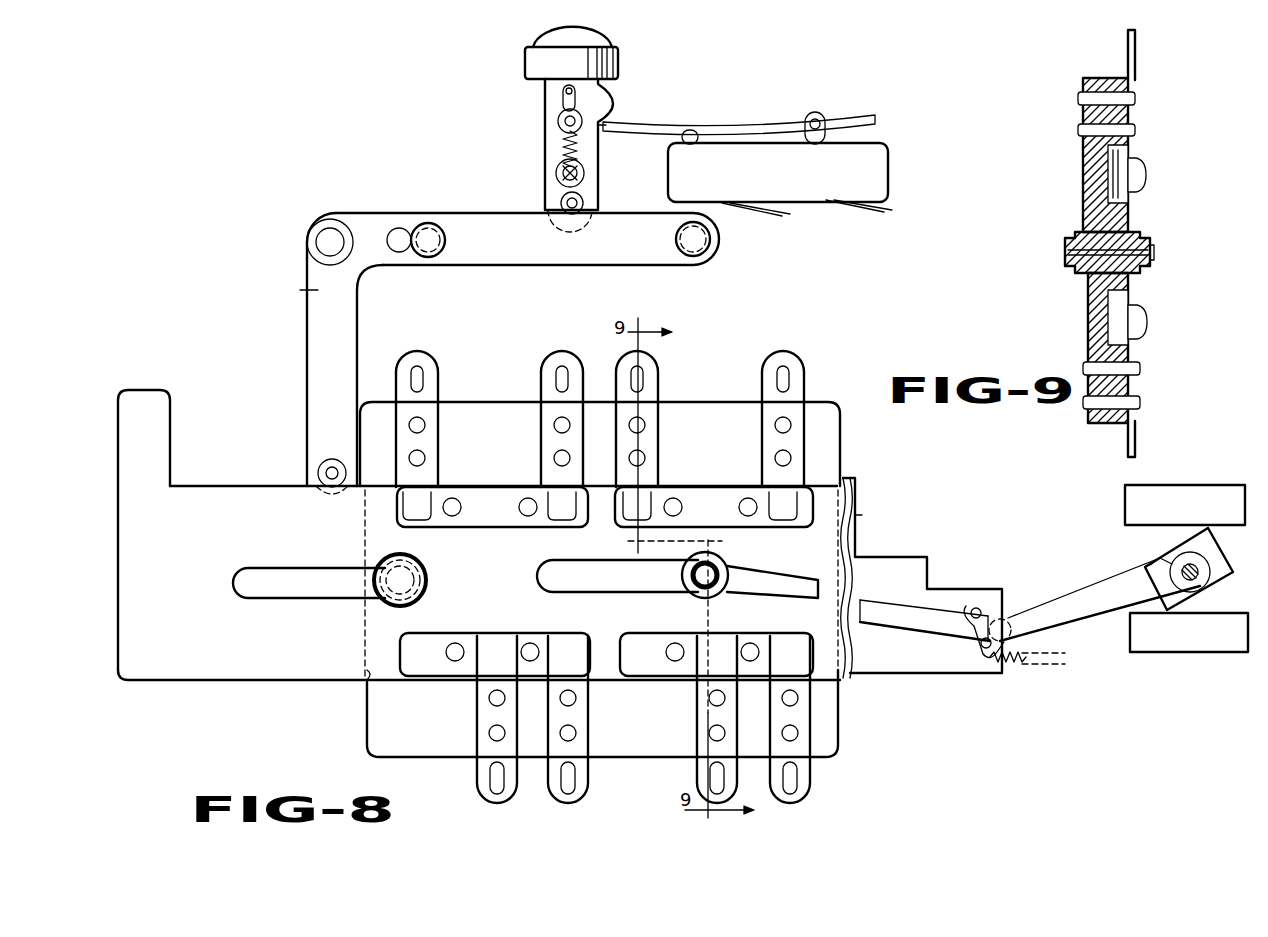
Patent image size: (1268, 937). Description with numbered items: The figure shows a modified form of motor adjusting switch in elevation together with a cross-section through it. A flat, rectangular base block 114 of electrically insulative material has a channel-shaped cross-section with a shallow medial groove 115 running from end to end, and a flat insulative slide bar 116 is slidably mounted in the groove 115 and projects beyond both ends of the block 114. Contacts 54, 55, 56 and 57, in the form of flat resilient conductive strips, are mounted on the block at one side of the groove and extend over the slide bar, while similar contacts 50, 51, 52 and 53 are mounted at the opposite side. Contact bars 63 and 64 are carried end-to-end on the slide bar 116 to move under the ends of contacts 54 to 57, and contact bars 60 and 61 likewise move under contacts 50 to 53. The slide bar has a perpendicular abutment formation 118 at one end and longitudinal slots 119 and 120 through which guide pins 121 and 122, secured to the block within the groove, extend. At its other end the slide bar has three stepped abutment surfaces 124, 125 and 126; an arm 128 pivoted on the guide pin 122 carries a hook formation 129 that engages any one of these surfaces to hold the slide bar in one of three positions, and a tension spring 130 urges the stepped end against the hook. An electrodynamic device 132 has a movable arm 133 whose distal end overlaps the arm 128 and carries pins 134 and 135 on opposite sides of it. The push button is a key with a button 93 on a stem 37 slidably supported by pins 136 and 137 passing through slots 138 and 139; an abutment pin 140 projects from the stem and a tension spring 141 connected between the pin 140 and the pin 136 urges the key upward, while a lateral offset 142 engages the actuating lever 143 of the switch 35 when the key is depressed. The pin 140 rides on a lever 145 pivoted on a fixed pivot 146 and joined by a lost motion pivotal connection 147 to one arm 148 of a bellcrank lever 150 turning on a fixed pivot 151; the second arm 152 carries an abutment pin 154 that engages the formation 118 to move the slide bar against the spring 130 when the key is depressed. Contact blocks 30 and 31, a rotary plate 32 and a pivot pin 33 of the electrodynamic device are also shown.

In FIG. 8, the lower contact block 30 is at (1140, 627).
In FIG. 8, the upper contact block 31 is at (1166, 516).
In FIG. 8, the rotary contact plate 32 is at (1215, 560).
In FIG. 8, the pivot pin 33 is at (1200, 584).
In FIG. 8, the switch 35 is at (668, 182).
In FIG. 8, the stem 37 is at (548, 116).
In FIG. 8, the contact 50 is at (482, 768).
In FIG. 8, the contact 51 is at (556, 766).
In FIG. 8, the contact 52 is at (700, 766).
In FIG. 9, the contact 52 is at (1136, 444).
In FIG. 8, the contact 53 is at (775, 766).
In FIG. 8, the contact 54 is at (402, 448).
In FIG. 8, the contact 55 is at (543, 436).
In FIG. 8, the contact 56 is at (622, 442).
In FIG. 9, the contact 56 is at (1136, 84).
In FIG. 8, the contact 57 is at (766, 438).
In FIG. 8, the contact bar 60 is at (455, 628).
In FIG. 8, the contact bar 61 is at (670, 618).
In FIG. 9, the contact bar 61 is at (1140, 300).
In FIG. 8, the contact bar 63 is at (498, 528).
In FIG. 8, the contact bar 64 is at (722, 520).
In FIG. 9, the contact bar 64 is at (1140, 192).
In FIG. 8, the button 93 is at (540, 36).
In FIG. 8, the base block 114 is at (367, 739).
In FIG. 9, the base block 114 is at (1086, 157).
In FIG. 8, the groove 115 is at (365, 684).
In FIG. 9, the groove 115 is at (1130, 152).
In FIG. 8, the slide bar 116 is at (250, 684).
In FIG. 9, the slide bar 116 is at (1132, 216).
In FIG. 8, the abutment formation 118 is at (170, 437).
In FIG. 8, the slot 119 is at (280, 598).
In FIG. 8, the slot 120 is at (622, 590).
In FIG. 9, the slot 120 is at (1090, 292).
In FIG. 8, the guide pin 121 is at (425, 582).
In FIG. 8, the guide pin 122 is at (685, 576).
In FIG. 9, the guide pin 122 is at (1070, 262).
In FIG. 8, the stepped abutment surface 124 is at (1003, 598).
In FIG. 8, the stepped abutment surface 125 is at (938, 538).
In FIG. 8, the stepped abutment surface 126 is at (898, 500).
In FIG. 8, the arm 128 is at (910, 626).
In FIG. 9, the arm 128 is at (1148, 264).
In FIG. 8, the hook formation 129 is at (1012, 630).
In FIG. 8, the tension spring 130 is at (1022, 665).
In FIG. 8, the electrodynamic device 132 is at (1150, 562).
In FIG. 8, the movable arm 133 is at (1056, 610).
In FIG. 8, the pin 134 is at (970, 609).
In FIG. 8, the pin 135 is at (980, 644).
In FIG. 8, the pin 136 is at (558, 124).
In FIG. 8, the pin 137 is at (556, 174).
In FIG. 8, the slot 138 is at (560, 90).
In FIG. 8, the slot 139 is at (563, 146).
In FIG. 8, the abutment pin 140 is at (561, 203).
In FIG. 8, the arm 141 is at (598, 146).
In FIG. 8, the lateral offset 142 is at (612, 96).
In FIG. 8, the actuating lever 143 is at (718, 124).
In FIG. 8, the lever 145 is at (532, 264).
In FIG. 8, the fixed pivot 146 is at (697, 256).
In FIG. 8, the lost motion pivotal connection 147 is at (426, 224).
In FIG. 8, the arm 148 is at (370, 204).
In FIG. 8, the bellcrank lever 150 is at (290, 287).
In FIG. 8, the fixed pivot 151 is at (317, 246).
In FIG. 8, the arm 152 is at (318, 416).
In FIG. 8, the abutment pin 154 is at (320, 472).